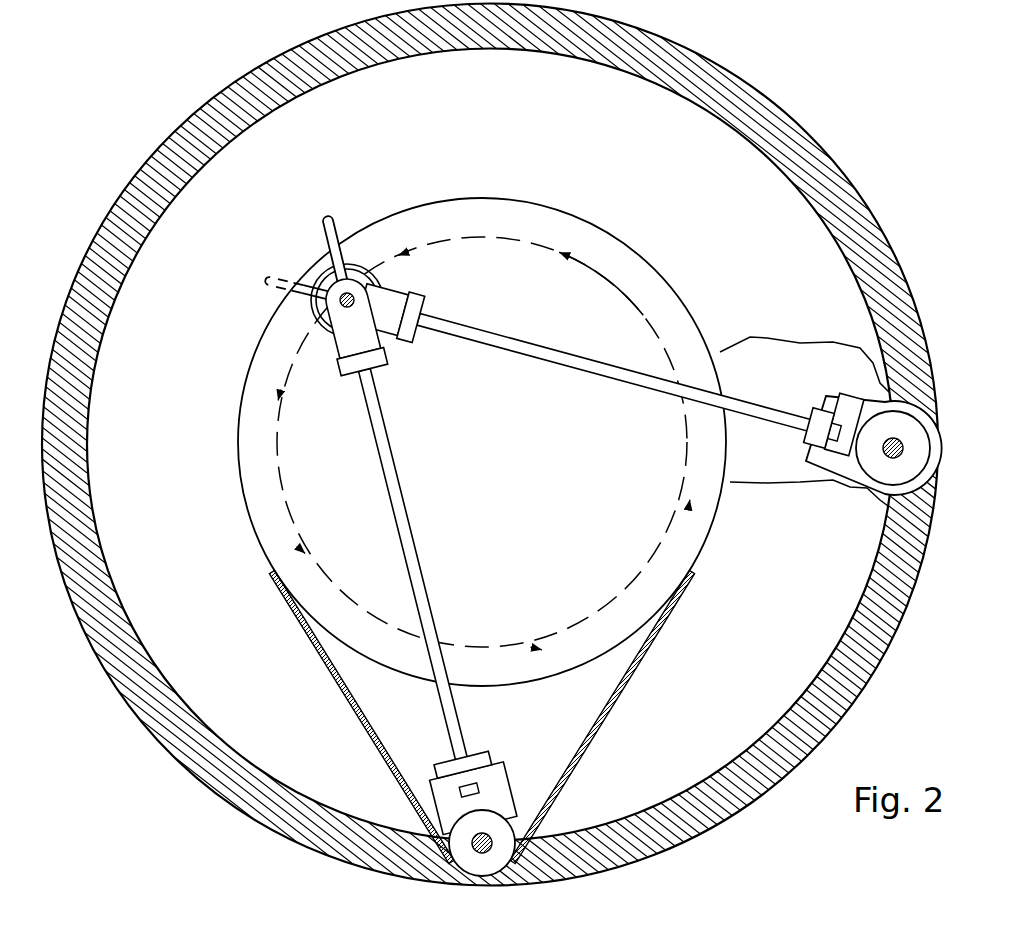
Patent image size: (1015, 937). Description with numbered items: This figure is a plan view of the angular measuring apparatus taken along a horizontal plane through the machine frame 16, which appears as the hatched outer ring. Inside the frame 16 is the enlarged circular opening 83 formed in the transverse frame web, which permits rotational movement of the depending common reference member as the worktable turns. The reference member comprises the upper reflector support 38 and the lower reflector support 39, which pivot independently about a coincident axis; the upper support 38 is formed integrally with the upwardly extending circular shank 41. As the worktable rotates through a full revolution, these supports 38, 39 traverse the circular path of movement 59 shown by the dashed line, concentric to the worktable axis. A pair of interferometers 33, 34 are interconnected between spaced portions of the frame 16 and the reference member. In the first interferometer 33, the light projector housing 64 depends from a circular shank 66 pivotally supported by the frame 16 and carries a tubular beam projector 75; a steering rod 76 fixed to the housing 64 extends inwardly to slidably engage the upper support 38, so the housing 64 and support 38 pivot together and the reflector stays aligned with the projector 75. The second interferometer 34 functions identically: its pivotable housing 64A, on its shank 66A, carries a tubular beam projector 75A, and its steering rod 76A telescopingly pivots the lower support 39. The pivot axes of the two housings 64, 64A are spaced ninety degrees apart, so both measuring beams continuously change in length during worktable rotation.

The machine frame 16 is at (851, 218).
The enlarged circular opening 83 is at (498, 208).
The circular path of movement 59 is at (611, 292).
The circular shank 41 is at (332, 263).
The upper reflector support 38 is at (349, 352).
The lower reflector support 39 is at (395, 312).
The steering rod 76 is at (432, 637).
The steering rod 76A is at (660, 383).
The interferometer 33 is at (438, 758).
The tubular beam projector 75 is at (488, 752).
The light projector housing 64 is at (496, 806).
The circular shank 66 is at (556, 818).
The interferometer 34 is at (845, 492).
The tubular beam projector 75A is at (816, 407).
The light projector housing 64A is at (836, 449).
The circular shank 66A is at (896, 447).